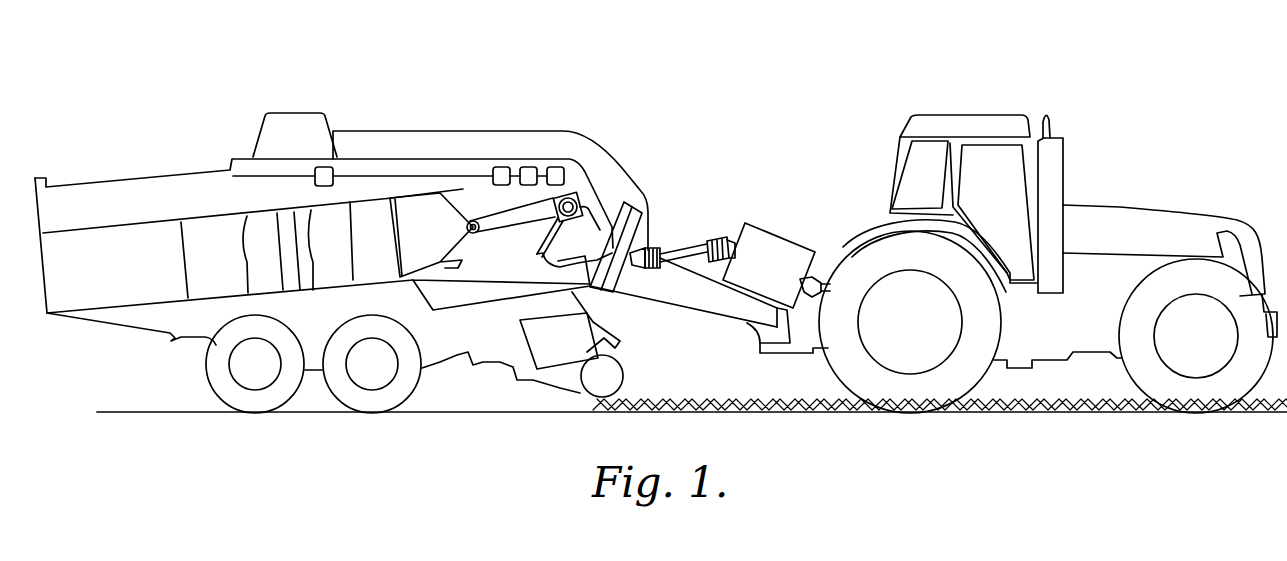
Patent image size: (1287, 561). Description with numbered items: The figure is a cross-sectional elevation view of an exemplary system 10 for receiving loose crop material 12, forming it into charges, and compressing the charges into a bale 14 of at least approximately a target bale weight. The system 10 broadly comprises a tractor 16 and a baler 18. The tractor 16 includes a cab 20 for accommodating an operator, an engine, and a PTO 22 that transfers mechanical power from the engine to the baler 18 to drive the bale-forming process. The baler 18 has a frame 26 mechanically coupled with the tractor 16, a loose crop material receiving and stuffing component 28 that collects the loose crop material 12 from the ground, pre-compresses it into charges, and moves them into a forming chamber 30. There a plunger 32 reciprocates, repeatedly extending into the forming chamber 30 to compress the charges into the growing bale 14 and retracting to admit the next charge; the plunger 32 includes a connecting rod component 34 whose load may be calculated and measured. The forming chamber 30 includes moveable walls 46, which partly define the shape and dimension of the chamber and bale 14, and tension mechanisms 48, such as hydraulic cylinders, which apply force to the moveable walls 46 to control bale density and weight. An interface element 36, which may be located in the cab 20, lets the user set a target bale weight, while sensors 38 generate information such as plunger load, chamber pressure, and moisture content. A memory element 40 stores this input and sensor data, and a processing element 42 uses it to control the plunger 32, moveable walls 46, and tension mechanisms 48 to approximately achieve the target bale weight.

The system 10 is at (661, 218).
The loose crop material 12 is at (716, 390).
The bale 14 is at (226, 264).
The tractor 16 is at (1012, 245).
The baler 18 is at (425, 239).
The cab 20 is at (1006, 191).
The PTO 22 is at (829, 256).
The frame 26 is at (694, 299).
The loose crop material receiving and stuffing component 28 is at (640, 388).
The forming chamber 30 is at (372, 212).
The plunger 32 is at (442, 246).
The connecting rod component 34 is at (513, 222).
The interface element 36 is at (558, 172).
The sensors 38 is at (323, 167).
The memory element 40 is at (500, 167).
The processing element 42 is at (532, 167).
The moveable walls 46 is at (257, 248).
The tension mechanisms 48 is at (287, 230).